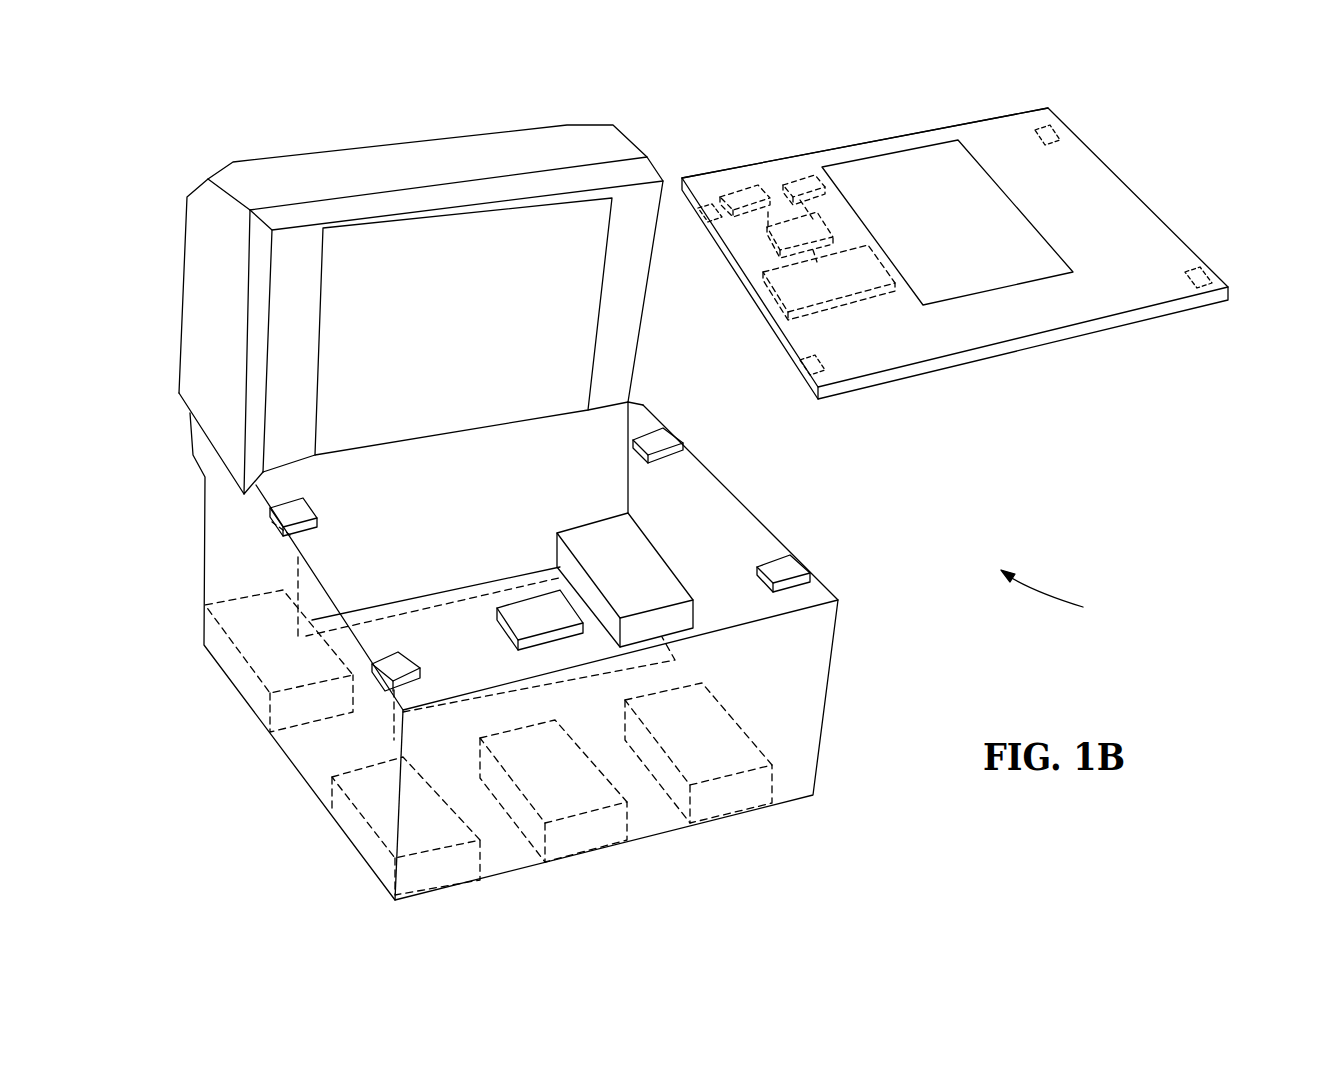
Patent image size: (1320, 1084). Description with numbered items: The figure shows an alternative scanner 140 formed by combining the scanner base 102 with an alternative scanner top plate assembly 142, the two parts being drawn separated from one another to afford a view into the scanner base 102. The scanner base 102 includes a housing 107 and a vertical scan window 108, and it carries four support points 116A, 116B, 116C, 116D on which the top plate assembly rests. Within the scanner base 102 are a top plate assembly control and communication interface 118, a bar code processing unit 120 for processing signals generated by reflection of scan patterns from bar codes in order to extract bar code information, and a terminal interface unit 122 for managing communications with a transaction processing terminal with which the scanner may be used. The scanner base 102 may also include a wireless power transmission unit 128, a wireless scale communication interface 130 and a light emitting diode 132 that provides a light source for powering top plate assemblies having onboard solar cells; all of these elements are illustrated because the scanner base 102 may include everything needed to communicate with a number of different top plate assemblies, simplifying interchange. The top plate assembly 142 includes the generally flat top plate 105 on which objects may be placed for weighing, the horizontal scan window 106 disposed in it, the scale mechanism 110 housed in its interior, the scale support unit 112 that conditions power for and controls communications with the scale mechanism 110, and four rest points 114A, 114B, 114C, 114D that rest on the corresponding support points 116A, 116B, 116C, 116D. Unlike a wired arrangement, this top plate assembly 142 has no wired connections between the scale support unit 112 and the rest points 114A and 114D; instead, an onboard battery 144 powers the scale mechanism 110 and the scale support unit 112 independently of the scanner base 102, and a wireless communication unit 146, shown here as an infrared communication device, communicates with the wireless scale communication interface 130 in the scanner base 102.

The scanner base 102 is at (262, 158).
The top plate 105 is at (1142, 257).
The horizontal scan window 106 is at (1018, 206).
The housing 107 is at (508, 683).
The vertical scan window 108 is at (321, 318).
The scale mechanism 110 is at (868, 296).
The scale support unit 112 is at (828, 227).
The rest point 114A is at (724, 230).
The rest point 114B is at (1067, 118).
The rest point 114C is at (1205, 256).
The rest point 114D is at (816, 360).
The support point 116A is at (308, 507).
The support point 116B is at (668, 462).
The support point 116C is at (776, 556).
The support point 116D is at (392, 655).
The top plate assembly control and communication interface 118 is at (588, 527).
The bar code processing unit 120 is at (645, 838).
The terminal interface unit 122 is at (714, 697).
The wireless power transmission unit 128 is at (218, 598).
The wireless scale communication interface 130 is at (330, 791).
The light emitting diode (LED) 132 is at (528, 643).
The alternative scanner 140 is at (1062, 595).
The alternative scanner top plate assembly 142 is at (912, 133).
The onboard battery 144 is at (792, 175).
The wireless communication unit 146 is at (738, 183).